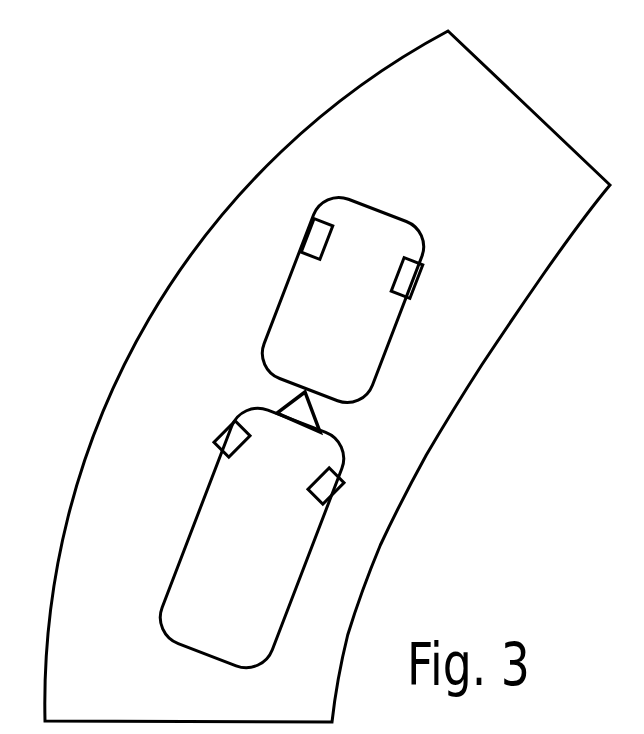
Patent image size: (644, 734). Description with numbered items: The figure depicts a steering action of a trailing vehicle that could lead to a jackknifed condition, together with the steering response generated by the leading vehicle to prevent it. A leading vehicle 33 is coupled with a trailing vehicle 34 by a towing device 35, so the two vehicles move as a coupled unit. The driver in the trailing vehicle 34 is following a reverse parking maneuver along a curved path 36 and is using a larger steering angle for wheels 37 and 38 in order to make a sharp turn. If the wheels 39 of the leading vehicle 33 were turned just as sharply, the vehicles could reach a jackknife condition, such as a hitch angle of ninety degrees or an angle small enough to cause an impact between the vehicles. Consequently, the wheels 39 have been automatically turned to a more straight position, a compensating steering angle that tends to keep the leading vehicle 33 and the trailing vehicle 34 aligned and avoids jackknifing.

The leading vehicle 33 is at (274, 312).
The trailing vehicle 34 is at (182, 543).
The towing device 35 is at (317, 420).
The curved path 36 is at (45, 660).
The wheel 37 is at (220, 433).
The wheel 38 is at (343, 482).
The wheels 39 is at (404, 257).